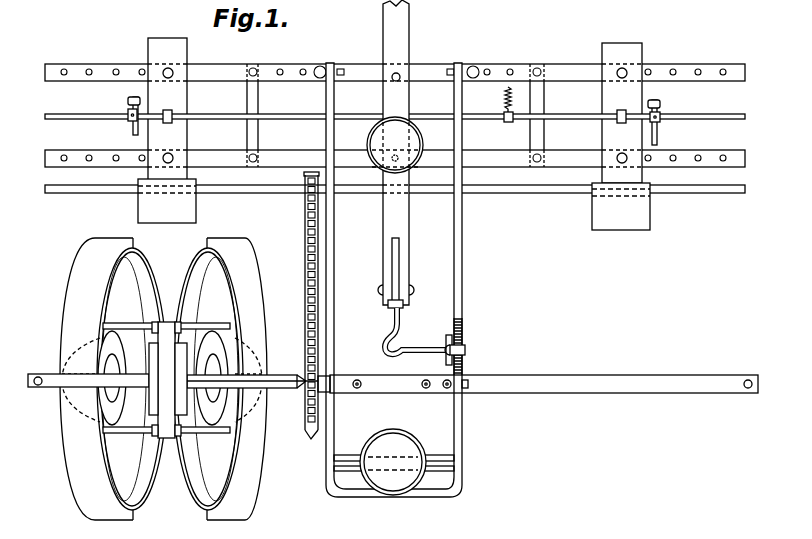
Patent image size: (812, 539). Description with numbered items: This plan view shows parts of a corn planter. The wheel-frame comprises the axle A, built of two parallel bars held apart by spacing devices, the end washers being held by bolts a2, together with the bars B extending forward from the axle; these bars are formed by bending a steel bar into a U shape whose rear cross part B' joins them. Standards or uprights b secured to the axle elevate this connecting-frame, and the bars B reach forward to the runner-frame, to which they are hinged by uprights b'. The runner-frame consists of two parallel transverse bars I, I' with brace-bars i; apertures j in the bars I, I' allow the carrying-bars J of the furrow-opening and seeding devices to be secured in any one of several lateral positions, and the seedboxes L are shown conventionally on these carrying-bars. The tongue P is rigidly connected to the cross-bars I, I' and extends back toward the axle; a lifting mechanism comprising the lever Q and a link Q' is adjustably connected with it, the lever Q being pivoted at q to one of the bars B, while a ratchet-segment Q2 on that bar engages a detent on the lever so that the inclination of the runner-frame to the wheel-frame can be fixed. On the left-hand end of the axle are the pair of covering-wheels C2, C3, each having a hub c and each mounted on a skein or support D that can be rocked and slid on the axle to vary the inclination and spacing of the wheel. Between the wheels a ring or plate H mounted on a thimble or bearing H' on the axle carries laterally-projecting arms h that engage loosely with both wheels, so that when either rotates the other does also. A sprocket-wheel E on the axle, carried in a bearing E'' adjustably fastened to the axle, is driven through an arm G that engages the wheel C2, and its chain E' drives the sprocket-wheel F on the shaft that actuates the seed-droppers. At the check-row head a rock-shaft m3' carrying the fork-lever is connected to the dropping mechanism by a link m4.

The transverse bar I is at (395, 58).
The transverse bar I' is at (395, 145).
The aperture j is at (63, 76).
The carrying-bar J is at (187, 103).
The brace-bar i is at (243, 124).
The upright b' is at (388, 50).
The tongue P is at (409, 38).
The sprocket-wheel F is at (310, 172).
The bearing E'' is at (395, 201).
The seedbox L is at (168, 223).
The sprocket-chain E' is at (292, 265).
The wheel C2 is at (180, 386).
The wheel C3 is at (113, 386).
The thimble or bearing H' is at (166, 355).
The laterally-projecting arm h is at (195, 323).
The hub c is at (63, 360).
The arm G is at (290, 375).
The bar B is at (394, 280).
The link Q' is at (413, 273).
The ratchet-segment Q2 is at (463, 318).
The pivot q is at (464, 342).
The lever Q is at (472, 346).
The standard or upright b is at (394, 381).
The skein or support D is at (220, 395).
The ring or plate H is at (168, 409).
The sprocket-wheel E is at (306, 324).
The axle A is at (541, 393).
The bolt a2 is at (752, 384).
The rear cross part B' is at (367, 508).
The rock-shaft m3' is at (704, 129).
The link m4 is at (660, 146).